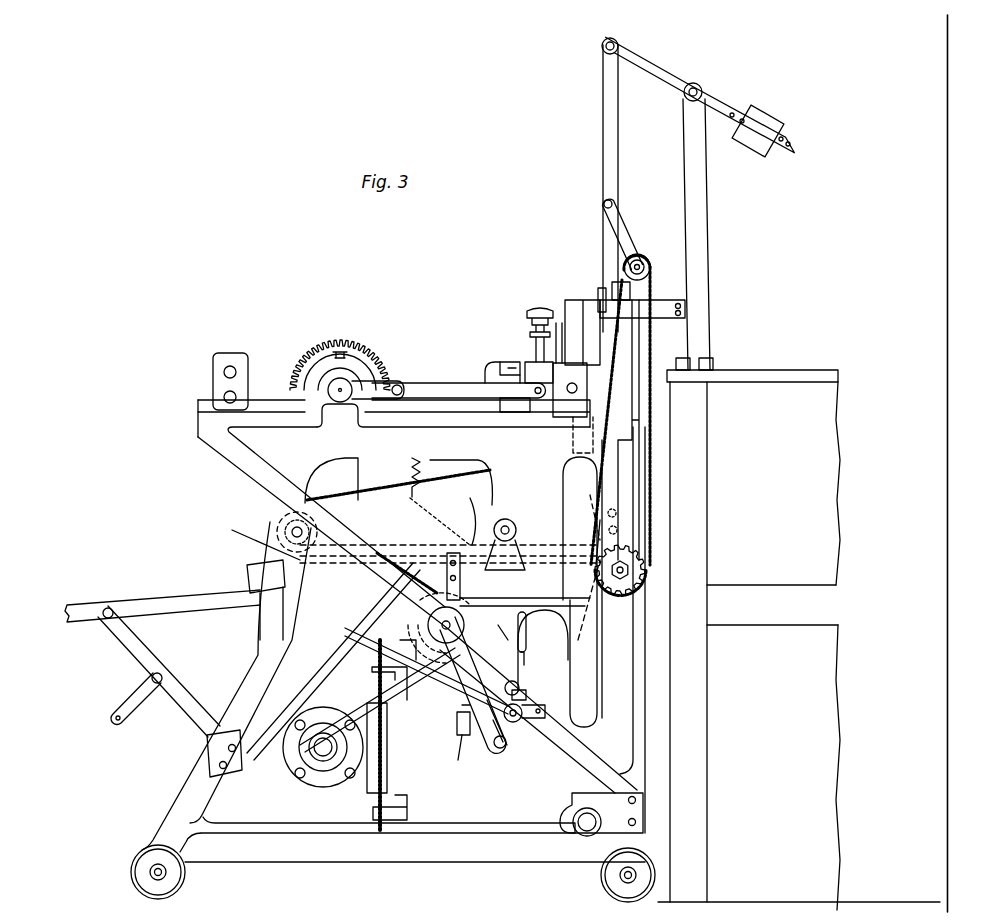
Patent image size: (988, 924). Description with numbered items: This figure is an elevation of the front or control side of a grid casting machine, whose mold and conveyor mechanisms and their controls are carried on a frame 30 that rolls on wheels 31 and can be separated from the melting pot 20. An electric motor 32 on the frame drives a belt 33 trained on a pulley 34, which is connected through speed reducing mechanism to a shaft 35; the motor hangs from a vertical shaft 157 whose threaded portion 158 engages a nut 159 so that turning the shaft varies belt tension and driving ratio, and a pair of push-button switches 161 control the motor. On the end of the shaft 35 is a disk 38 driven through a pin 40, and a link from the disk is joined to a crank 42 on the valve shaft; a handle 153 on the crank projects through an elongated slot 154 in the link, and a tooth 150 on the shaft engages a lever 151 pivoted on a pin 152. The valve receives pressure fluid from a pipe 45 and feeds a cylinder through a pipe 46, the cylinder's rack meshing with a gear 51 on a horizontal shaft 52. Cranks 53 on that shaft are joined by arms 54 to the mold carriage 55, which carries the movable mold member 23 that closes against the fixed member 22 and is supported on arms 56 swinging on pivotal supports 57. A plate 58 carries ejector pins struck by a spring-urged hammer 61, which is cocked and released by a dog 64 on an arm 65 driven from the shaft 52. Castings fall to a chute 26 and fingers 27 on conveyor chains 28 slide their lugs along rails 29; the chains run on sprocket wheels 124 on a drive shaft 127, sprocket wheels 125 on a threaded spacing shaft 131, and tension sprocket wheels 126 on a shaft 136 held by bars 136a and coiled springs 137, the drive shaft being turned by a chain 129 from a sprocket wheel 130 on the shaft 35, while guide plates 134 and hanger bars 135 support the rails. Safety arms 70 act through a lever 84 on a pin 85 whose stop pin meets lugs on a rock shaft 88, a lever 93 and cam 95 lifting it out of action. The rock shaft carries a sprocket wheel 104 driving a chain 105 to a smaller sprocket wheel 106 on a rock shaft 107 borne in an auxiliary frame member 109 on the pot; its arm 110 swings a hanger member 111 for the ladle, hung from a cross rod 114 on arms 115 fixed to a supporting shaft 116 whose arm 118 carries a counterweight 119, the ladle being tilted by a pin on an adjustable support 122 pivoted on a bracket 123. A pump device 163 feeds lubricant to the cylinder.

The melting pot 20 is at (770, 376).
The fixed mold member 22 is at (573, 392).
The movable mold member 23 is at (583, 322).
The chute 26 is at (335, 680).
The fingers 27 is at (358, 477).
The conveyor chains 28 is at (398, 481).
The rails 29 is at (200, 603).
The frame 30 is at (230, 465).
The wheels 31 is at (170, 882).
The electric motor 32 is at (318, 785).
The belt 33 is at (392, 718).
The pulley 34 is at (425, 688).
The shaft 35 is at (420, 648).
The disk 38 is at (472, 685).
The pin 40 is at (525, 598).
The crank 42 is at (508, 750).
The pipe 45 is at (458, 740).
The pipe 46 is at (550, 657).
The gear 51 is at (322, 348).
The horizontal shaft 52 is at (340, 402).
The cranks 53 is at (392, 378).
The arms 54 is at (452, 386).
The mold carriage 55 is at (535, 363).
The arms 56 is at (583, 687).
The pivotal supports 57 is at (575, 820).
The plate 58 is at (558, 322).
The hammer 61 is at (512, 407).
The dog 64 is at (514, 370).
The arm 65 is at (488, 368).
The arms 70 is at (523, 541).
The lever 84 is at (533, 632).
The pin 85 is at (600, 608).
The rock shaft 88 is at (630, 570).
The lever 93 is at (522, 648).
The cam 95 is at (495, 639).
The sprocket wheel 104 is at (628, 587).
The chain 105 is at (652, 461).
The sprocket wheel 106 is at (612, 290).
The rock shaft 107 is at (642, 260).
The auxiliary frame member 109 is at (690, 190).
The arm 110 is at (625, 223).
The hanger member 111 is at (603, 125).
The cross rod 114 is at (602, 41).
The arms 115 is at (650, 62).
The supporting shaft 116 is at (700, 88).
The arm 118 is at (795, 143).
The counterweight 119 is at (770, 118).
The adjustable support 122 is at (598, 296).
The bracket 123 is at (665, 307).
The sprocket wheels 124 is at (285, 548).
The sprocket wheels 125 is at (426, 555).
The sprocket wheels 126 is at (450, 549).
The drive shaft 127 is at (278, 525).
The chain 129 is at (437, 576).
The sprocket wheel 130 is at (433, 628).
The shaft 131 is at (443, 521).
The guide plates 134 is at (247, 572).
The hanger bars 135 is at (490, 540).
The shaft 136 is at (415, 508).
The bars 136a is at (350, 520).
The coiled springs 137 is at (410, 457).
The tooth 150 is at (520, 722).
The lever 151 is at (460, 760).
The pin 152 is at (513, 684).
The handle 153 is at (485, 732).
The elongated slot 154 is at (497, 755).
The vertical shaft 157 is at (384, 768).
The threaded portion 158 is at (372, 704).
The nut 159 is at (372, 683).
The switches 161 is at (225, 356).
The pump device 163 is at (527, 312).